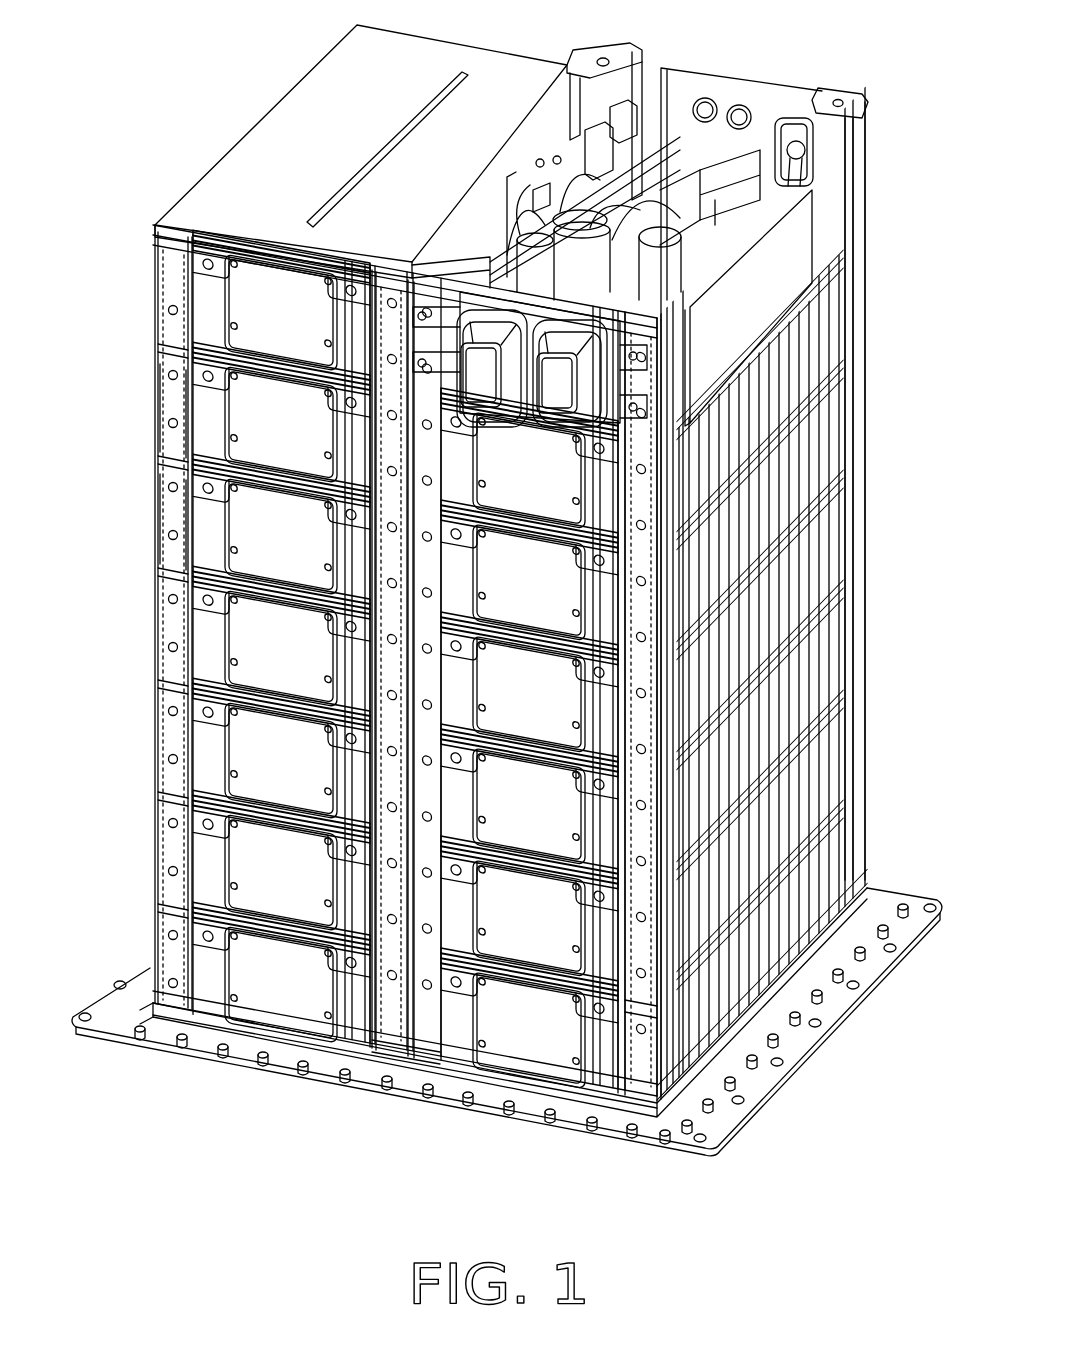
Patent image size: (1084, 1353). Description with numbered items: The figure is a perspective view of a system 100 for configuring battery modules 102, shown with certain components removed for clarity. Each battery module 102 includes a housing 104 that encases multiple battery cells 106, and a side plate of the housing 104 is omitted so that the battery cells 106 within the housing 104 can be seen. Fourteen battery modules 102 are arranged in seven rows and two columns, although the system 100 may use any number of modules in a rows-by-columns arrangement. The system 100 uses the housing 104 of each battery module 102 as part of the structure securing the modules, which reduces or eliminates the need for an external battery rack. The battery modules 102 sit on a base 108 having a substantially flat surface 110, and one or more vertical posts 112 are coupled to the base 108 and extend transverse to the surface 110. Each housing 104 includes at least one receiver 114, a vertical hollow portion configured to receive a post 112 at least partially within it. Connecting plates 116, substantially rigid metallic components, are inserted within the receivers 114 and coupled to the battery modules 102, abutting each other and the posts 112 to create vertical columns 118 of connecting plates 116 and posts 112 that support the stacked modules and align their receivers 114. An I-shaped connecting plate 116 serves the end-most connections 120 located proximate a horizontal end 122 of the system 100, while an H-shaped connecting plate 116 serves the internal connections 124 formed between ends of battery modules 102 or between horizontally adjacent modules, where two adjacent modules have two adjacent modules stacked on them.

The system 100 is at (792, 24).
The battery module 102 is at (208, 632).
The housing 104 is at (155, 283).
The battery cells 106 is at (846, 558).
The base 108 is at (860, 1028).
The surface 110 is at (827, 947).
The vertical post 112 is at (152, 1005).
The receiver 114 is at (653, 1063).
The connecting plate 116 is at (637, 1007).
The vertical column 118 is at (417, 1068).
The end-most connection 120 is at (145, 556).
The horizontal end 122 is at (148, 460).
The internal connection 124 is at (398, 985).